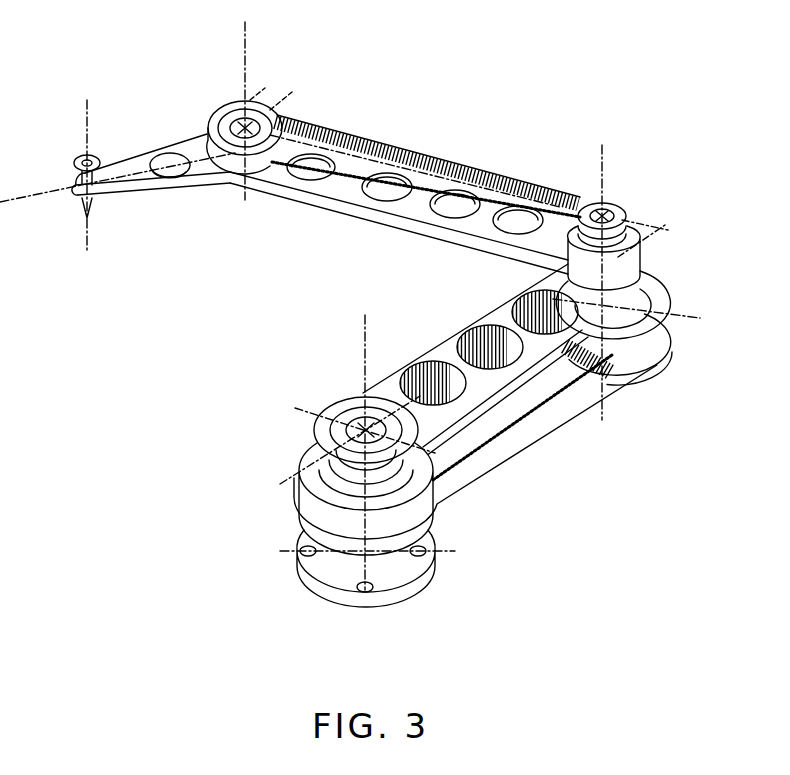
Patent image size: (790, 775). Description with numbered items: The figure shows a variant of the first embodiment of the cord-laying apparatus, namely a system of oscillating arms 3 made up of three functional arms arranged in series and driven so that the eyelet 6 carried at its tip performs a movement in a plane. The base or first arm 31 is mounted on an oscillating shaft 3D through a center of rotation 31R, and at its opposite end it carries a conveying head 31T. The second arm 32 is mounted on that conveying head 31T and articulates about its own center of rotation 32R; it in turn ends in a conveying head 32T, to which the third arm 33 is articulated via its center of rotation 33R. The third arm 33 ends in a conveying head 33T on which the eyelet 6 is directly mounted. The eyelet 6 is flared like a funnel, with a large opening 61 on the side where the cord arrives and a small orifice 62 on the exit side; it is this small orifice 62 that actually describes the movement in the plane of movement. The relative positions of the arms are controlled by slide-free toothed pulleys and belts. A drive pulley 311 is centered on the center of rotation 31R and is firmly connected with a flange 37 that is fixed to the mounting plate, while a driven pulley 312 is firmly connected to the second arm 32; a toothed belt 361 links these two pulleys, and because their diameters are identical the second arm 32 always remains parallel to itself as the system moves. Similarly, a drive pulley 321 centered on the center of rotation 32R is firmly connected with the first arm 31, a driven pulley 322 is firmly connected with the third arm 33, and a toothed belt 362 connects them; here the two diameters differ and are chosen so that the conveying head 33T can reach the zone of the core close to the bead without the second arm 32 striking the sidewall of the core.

The system of oscillating arms 3 is at (598, 95).
The eyelet 6 is at (73, 185).
The large opening 61 is at (78, 155).
The small orifice 62 is at (80, 216).
The first arm 31 is at (495, 309).
The center of rotation of the first arm 31R is at (360, 348).
The conveying head of the first arm 31T is at (640, 295).
The drive pulley 311 is at (425, 487).
The driven pulley 312 is at (664, 357).
The second arm 32 is at (417, 222).
The center of rotation of the second arm 32R is at (605, 150).
The conveying head of the second arm 32T is at (238, 192).
The drive pulley 321 is at (622, 208).
The driven pulley 322 is at (255, 108).
The third arm 33 is at (126, 167).
The center of rotation of the third arm 33R is at (246, 57).
The conveying head of the third arm 33T is at (103, 195).
The toothed belt 361 is at (540, 434).
The toothed belt 362 is at (450, 155).
The flange 37 is at (300, 572).
The oscillating shaft 3D is at (348, 418).